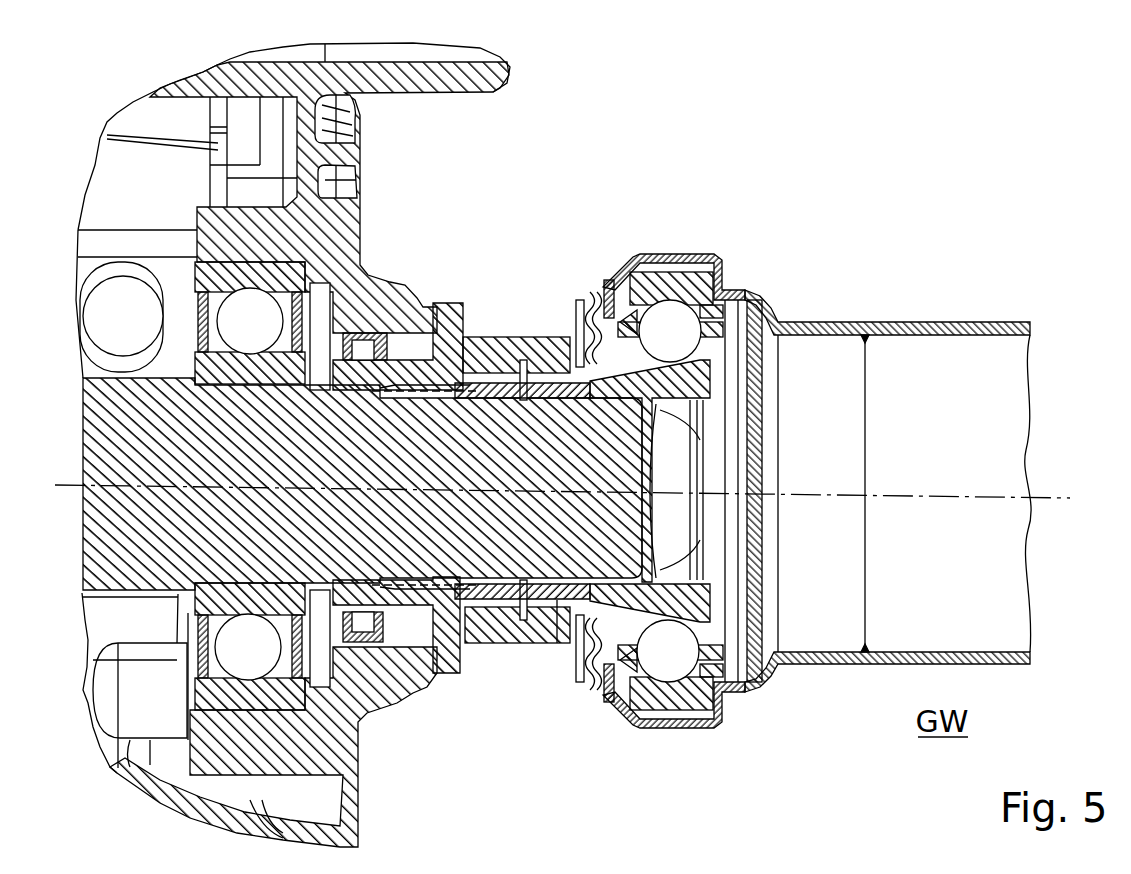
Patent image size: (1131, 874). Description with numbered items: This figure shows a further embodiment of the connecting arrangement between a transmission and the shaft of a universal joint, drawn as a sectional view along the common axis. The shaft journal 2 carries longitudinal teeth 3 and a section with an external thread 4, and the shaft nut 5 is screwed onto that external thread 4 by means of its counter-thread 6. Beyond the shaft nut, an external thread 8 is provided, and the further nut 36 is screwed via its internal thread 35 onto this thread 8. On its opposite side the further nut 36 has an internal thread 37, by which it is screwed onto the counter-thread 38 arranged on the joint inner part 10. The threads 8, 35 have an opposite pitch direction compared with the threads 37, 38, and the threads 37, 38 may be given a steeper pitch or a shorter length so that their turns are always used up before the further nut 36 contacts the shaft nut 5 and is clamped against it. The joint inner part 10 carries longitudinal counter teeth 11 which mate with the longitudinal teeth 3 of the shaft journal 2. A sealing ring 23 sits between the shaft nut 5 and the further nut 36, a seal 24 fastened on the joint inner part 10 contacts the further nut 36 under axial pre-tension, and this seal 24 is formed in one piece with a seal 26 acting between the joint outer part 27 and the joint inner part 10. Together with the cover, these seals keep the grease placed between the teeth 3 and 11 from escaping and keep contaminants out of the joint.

The shaft journal 2 is at (613, 500).
The longitudinal teeth 3 is at (617, 575).
The external thread 4 is at (420, 372).
The shaft nut 5 is at (455, 350).
The counter-thread 6 is at (447, 385).
The external thread 8 is at (518, 370).
The joint inner part 10 is at (733, 668).
The longitudinal counter teeth 11 is at (655, 413).
The sealing ring 23 is at (450, 640).
The seal 24 is at (557, 641).
The seal 26 is at (573, 657).
The joint outer part 27 is at (692, 280).
The internal thread 35 is at (502, 355).
The further nut 36 is at (548, 372).
The internal thread 37 is at (540, 378).
The counter-thread 38 is at (572, 340).